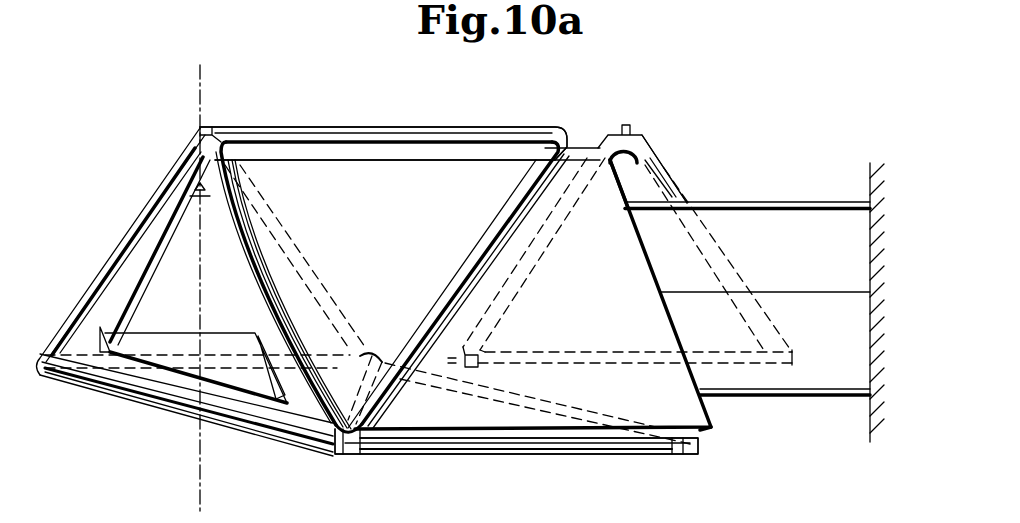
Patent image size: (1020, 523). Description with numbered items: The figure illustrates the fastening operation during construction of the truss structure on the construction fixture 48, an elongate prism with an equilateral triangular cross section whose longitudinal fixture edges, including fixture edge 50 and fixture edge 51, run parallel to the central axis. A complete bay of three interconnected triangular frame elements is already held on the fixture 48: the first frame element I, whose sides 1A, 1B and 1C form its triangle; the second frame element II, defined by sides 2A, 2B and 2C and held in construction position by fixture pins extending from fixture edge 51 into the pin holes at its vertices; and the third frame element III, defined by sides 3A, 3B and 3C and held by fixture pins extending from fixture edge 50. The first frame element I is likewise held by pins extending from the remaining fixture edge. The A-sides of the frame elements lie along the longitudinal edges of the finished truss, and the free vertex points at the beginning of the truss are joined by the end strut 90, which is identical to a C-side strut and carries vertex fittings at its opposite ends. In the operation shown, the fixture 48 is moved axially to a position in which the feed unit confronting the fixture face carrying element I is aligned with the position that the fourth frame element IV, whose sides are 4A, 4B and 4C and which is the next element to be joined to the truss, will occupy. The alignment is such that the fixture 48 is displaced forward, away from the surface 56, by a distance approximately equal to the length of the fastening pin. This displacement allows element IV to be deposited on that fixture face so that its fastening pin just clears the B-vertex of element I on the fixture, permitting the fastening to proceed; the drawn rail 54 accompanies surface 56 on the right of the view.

The first frame element I is at (158, 186).
The second frame element II is at (298, 122).
The third frame element III is at (440, 460).
The fourth frame element IV is at (676, 156).
The side A of first frame element 1A is at (86, 382).
The side B of first frame element 1B is at (120, 242).
The side C of first frame element 1C is at (322, 284).
The side A of second frame element 2A is at (348, 126).
The side B of second frame element 2B is at (268, 258).
The side C of second frame element 2C is at (446, 287).
The side A of third frame element 3A is at (516, 455).
The side B of third frame element 3B is at (352, 388).
The side C of third frame element 3C is at (495, 402).
The side A of fourth frame element 4A is at (627, 348).
The side B of fourth frame element 4B is at (550, 218).
The side C of fourth frame element 4C is at (678, 184).
The longitudinal fixture edge 51 is at (432, 156).
The guide rail 54 is at (806, 200).
The surface 56 is at (868, 180).
The construction fixture 48 is at (686, 410).
The longitudinal fixture edge 50 is at (702, 431).
The end strut 90 is at (272, 441).